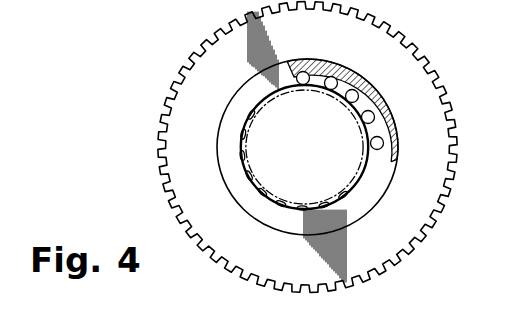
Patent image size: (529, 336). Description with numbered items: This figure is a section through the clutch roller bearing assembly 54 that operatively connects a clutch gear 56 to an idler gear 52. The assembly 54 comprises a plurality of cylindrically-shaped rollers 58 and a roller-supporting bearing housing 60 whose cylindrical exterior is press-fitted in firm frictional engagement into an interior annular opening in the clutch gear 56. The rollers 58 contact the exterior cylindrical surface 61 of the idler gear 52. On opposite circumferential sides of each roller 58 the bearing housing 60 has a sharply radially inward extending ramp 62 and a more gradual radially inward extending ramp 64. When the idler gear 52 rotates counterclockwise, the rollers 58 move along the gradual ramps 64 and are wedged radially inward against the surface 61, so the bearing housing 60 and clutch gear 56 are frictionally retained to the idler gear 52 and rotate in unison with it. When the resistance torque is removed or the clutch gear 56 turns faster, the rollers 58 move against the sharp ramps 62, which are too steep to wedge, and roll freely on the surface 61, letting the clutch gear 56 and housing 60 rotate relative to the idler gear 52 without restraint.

The idler gear 52 is at (330, 153).
The clutch roller bearing assembly 54 is at (221, 108).
The clutch gear 56 is at (404, 74).
The cylindrically-shaped rollers 58 is at (370, 105).
The bearing housing 60 is at (392, 128).
The exterior cylindrical surface 61 is at (267, 195).
The sharp ramp 62 is at (348, 75).
The gradual ramp 64 is at (318, 88).